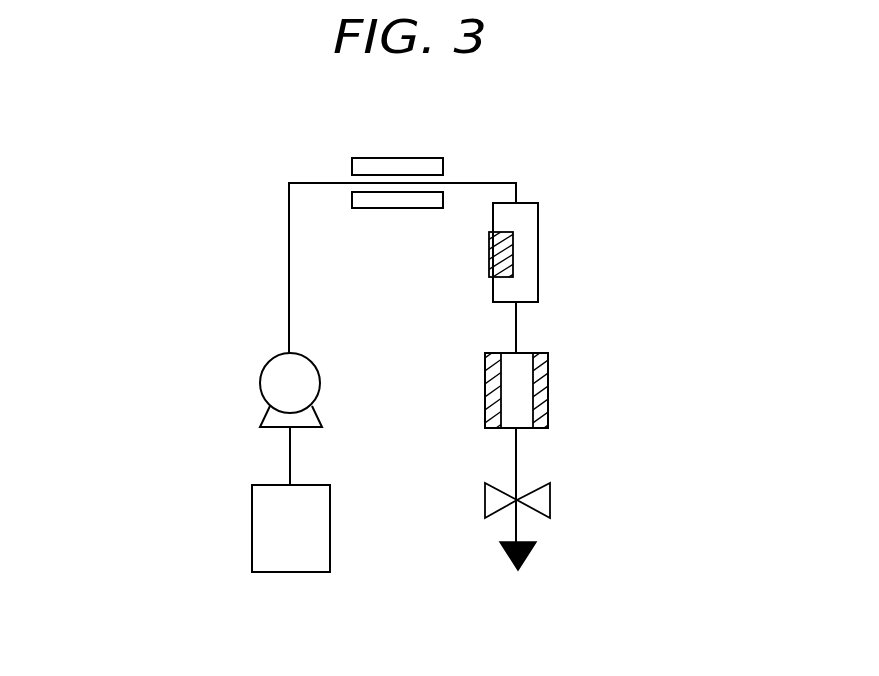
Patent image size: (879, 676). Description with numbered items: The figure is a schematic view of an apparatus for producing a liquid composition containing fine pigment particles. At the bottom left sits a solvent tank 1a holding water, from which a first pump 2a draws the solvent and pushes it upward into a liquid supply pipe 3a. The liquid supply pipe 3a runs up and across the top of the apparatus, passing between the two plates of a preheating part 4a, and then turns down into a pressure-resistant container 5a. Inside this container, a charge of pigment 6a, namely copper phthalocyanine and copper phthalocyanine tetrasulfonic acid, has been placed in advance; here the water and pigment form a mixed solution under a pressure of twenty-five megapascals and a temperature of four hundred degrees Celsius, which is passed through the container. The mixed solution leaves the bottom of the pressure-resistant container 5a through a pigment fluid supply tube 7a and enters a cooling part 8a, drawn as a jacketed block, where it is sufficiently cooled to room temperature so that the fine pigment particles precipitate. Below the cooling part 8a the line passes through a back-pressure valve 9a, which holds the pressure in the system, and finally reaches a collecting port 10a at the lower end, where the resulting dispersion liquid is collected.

The solvent tank 1a is at (289, 572).
The first pump 2a is at (260, 377).
The liquid supply pipe 3a is at (289, 203).
The preheating part 4a is at (425, 158).
The pressure-resistant container 5a is at (538, 232).
The pigment 6a is at (489, 252).
The pigment fluid supply tube 7a is at (516, 323).
The cooling part 8a is at (548, 372).
The back-pressure valve 9a is at (550, 498).
The collecting port 10a is at (530, 552).